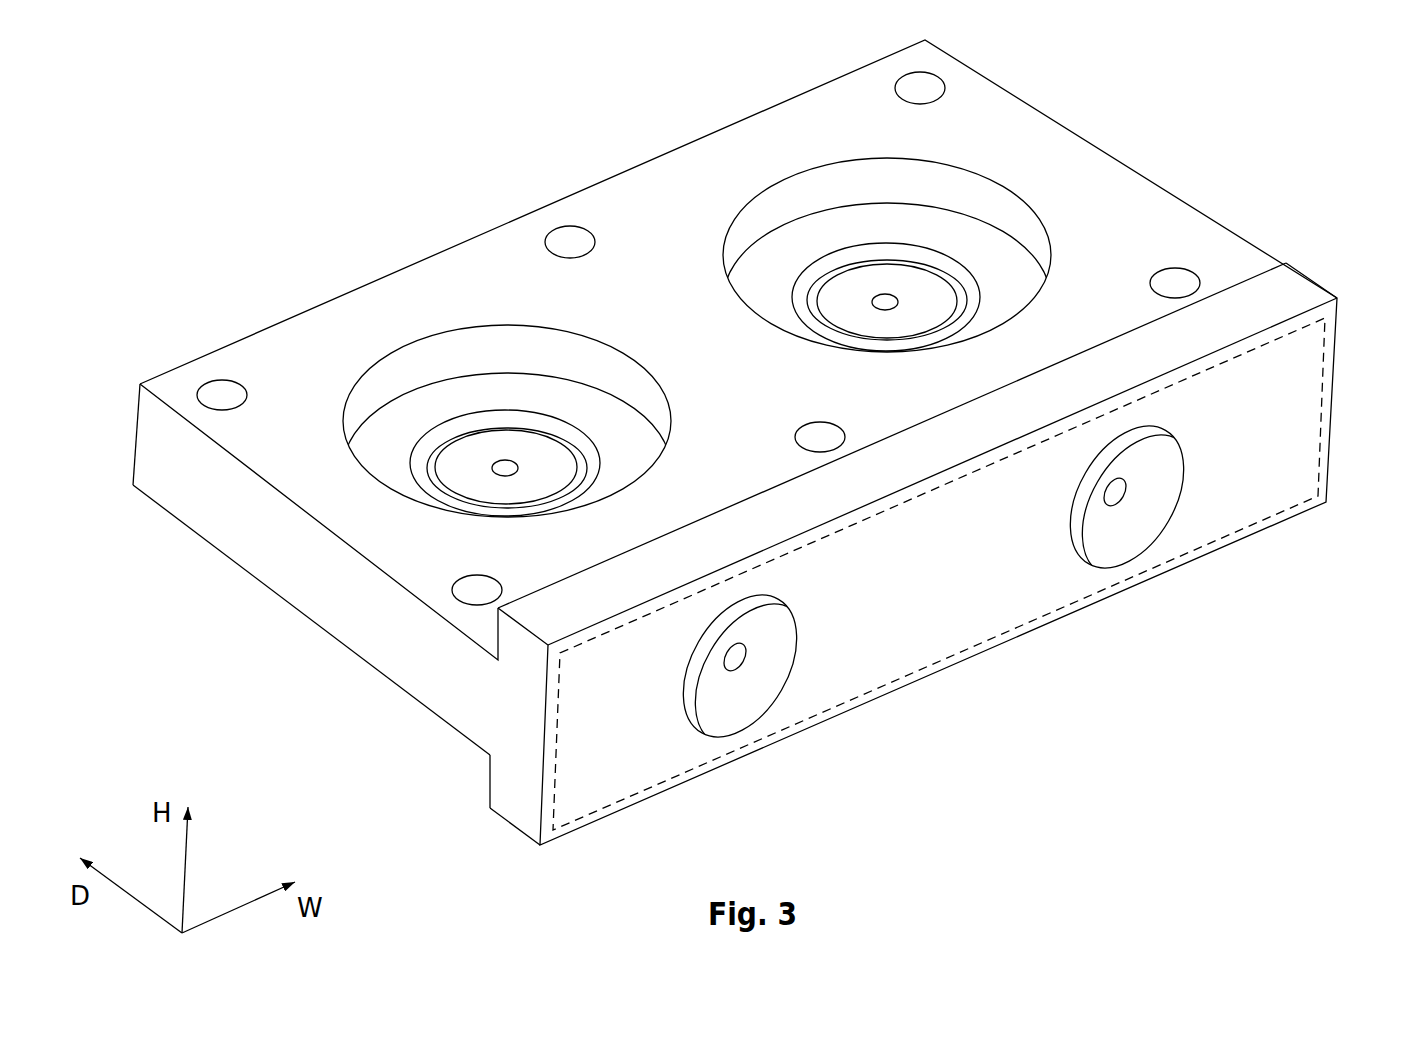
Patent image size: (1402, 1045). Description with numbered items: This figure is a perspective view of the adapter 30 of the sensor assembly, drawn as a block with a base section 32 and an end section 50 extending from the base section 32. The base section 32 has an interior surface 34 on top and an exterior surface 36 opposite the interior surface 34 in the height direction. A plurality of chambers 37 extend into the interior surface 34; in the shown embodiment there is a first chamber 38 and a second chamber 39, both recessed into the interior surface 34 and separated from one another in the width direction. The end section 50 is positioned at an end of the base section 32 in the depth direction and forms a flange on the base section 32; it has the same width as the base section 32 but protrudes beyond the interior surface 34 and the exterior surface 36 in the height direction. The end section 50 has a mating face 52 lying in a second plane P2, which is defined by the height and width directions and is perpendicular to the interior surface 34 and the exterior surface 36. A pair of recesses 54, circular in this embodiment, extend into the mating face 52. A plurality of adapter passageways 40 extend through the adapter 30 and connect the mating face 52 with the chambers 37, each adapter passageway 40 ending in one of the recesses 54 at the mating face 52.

The adapter 30 is at (225, 123).
The base section 32 is at (188, 532).
The interior surface 34 is at (255, 352).
The exterior surface 36 is at (313, 623).
The chambers 37 is at (788, 207).
The first chamber 38 is at (788, 207).
The second chamber 39 is at (493, 353).
The adapter passageways 40 is at (885, 297).
The end section 50 is at (515, 828).
The mating face 52 is at (643, 772).
The recesses 54 is at (737, 740).
The second plane P2 is at (1312, 362).